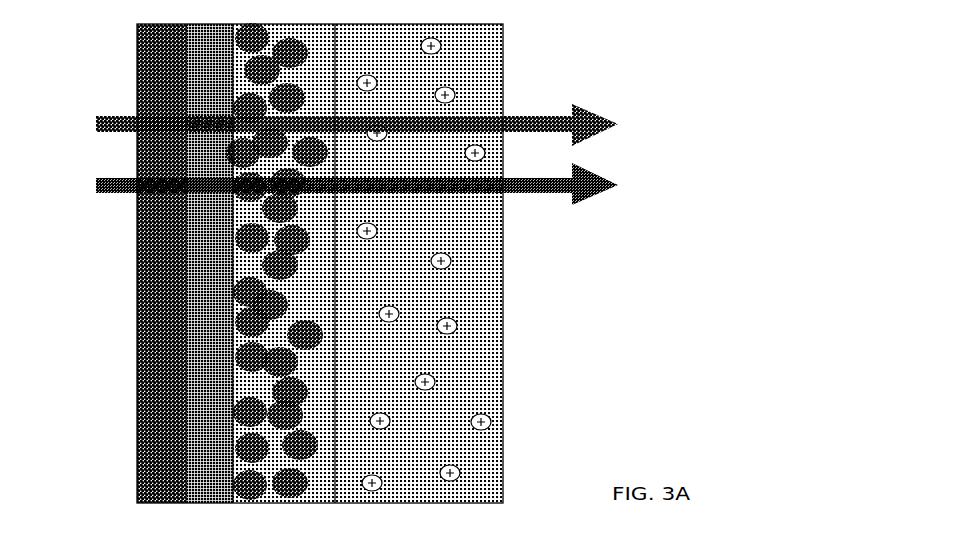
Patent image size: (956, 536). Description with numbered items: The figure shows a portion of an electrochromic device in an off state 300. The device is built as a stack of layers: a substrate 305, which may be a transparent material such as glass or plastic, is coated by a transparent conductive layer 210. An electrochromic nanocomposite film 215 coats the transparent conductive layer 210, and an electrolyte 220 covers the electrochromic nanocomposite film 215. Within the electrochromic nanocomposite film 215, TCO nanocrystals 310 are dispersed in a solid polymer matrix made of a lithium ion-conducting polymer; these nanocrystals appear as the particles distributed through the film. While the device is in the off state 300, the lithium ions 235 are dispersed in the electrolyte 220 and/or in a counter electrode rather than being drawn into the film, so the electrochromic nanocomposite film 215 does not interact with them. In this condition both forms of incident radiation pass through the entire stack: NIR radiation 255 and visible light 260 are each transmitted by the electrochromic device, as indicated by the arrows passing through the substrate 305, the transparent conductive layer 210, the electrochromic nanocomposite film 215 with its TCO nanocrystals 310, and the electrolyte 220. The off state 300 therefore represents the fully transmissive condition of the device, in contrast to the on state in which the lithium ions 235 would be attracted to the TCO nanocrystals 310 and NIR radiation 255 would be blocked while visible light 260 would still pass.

The off state 300 is at (672, 73).
The substrate 305 is at (160, 333).
The transparent conductive layer 210 is at (195, 56).
The TCO nanocrystals 310 is at (250, 503).
The electrochromic nanocomposite film 215 is at (317, 503).
The electrolyte 220 is at (462, 300).
The lithium ions 235 is at (491, 416).
The NIR radiation 255 is at (528, 115).
The visible light 260 is at (507, 190).